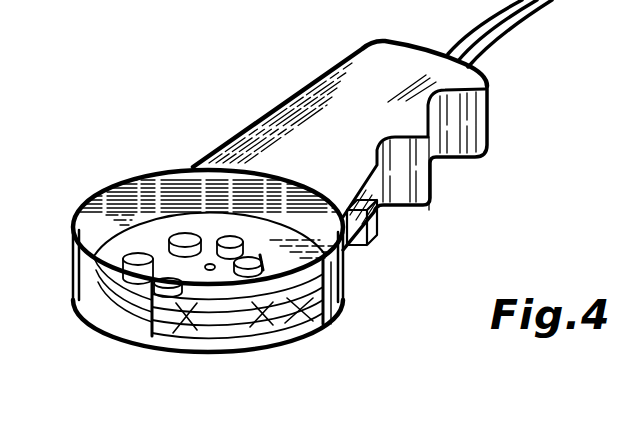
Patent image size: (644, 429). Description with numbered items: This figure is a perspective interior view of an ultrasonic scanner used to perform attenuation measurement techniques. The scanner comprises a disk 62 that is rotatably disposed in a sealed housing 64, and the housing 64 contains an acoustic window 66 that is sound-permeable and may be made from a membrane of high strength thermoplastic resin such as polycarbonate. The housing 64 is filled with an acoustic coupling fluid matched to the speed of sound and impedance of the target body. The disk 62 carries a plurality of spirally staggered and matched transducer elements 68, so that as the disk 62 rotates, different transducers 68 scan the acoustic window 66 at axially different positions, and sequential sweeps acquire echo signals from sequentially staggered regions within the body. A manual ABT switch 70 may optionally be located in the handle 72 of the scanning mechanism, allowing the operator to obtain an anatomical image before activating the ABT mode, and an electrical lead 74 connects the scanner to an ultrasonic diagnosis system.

The disk 62 is at (143, 233).
The sealed housing 64 is at (75, 298).
The acoustic window 66 is at (322, 322).
The transducer elements 68 is at (233, 237).
The manual ABT switch 70 is at (380, 232).
The handle 72 is at (382, 108).
The electrical lead 74 is at (528, 18).